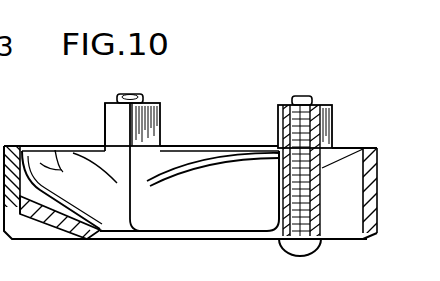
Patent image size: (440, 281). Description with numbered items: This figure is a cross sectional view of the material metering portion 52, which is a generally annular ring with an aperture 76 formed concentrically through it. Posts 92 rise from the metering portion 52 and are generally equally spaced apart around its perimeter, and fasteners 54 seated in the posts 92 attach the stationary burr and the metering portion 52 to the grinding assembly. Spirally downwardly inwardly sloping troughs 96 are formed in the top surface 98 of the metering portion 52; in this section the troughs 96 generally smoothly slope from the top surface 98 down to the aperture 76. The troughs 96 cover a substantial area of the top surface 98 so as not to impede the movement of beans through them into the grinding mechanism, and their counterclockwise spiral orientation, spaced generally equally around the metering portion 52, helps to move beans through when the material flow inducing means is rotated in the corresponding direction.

The material metering portion 52 is at (226, 124).
The fasteners 54 is at (147, 93).
The posts 92 is at (105, 117).
The troughs 96 is at (55, 150).
The top surface 98 is at (10, 146).
The aperture 76 is at (110, 239).